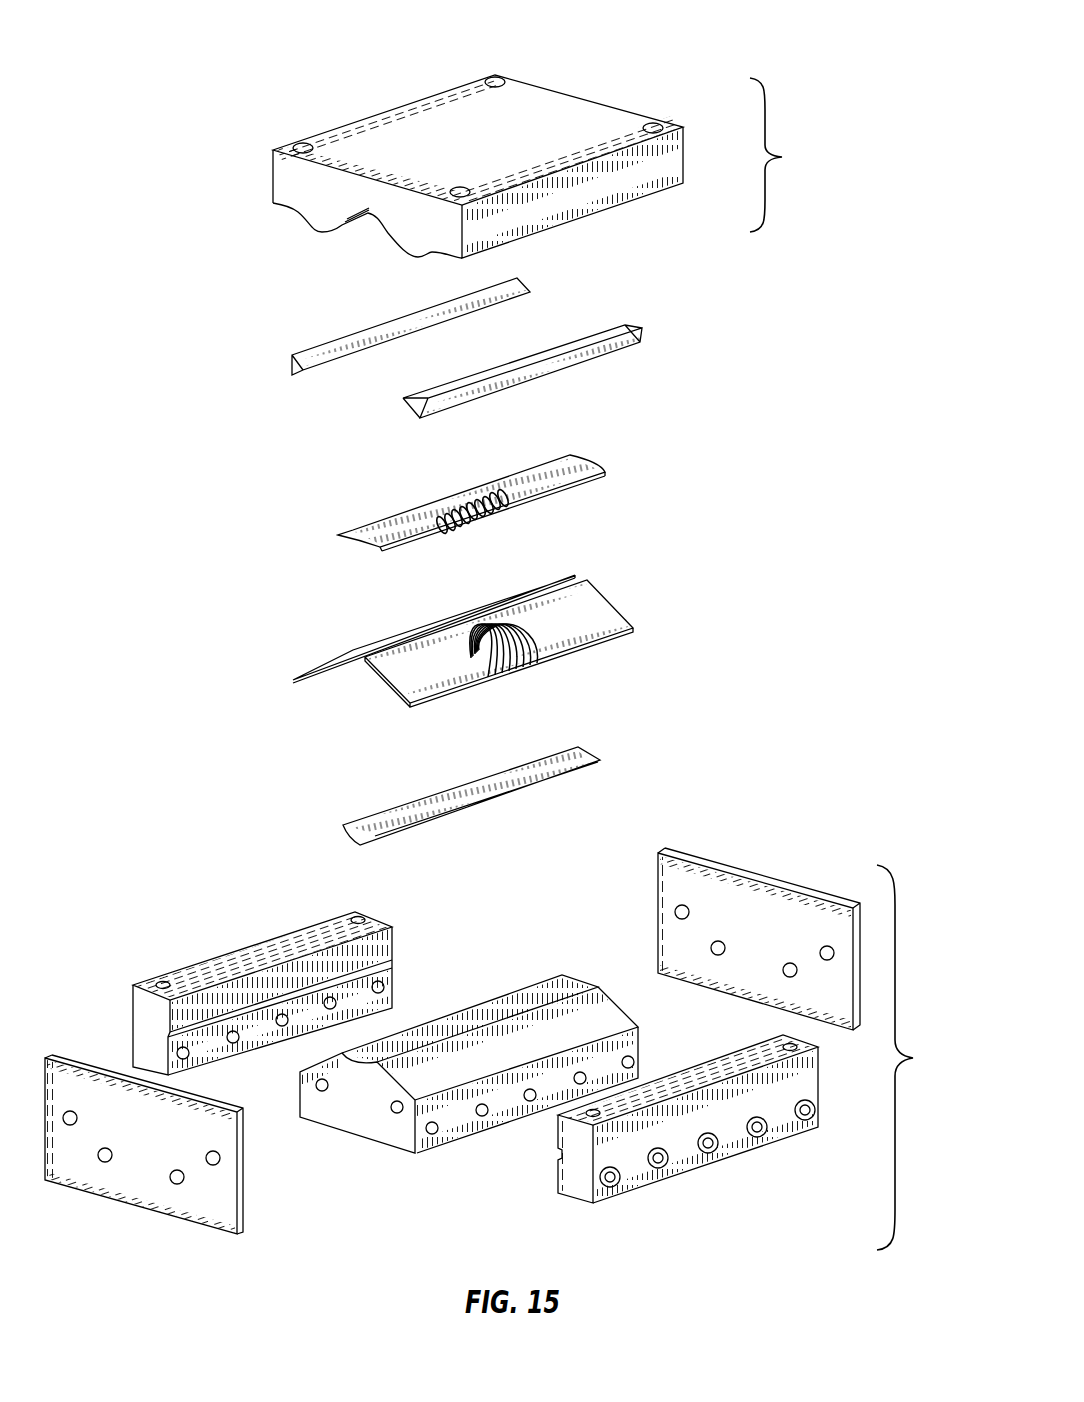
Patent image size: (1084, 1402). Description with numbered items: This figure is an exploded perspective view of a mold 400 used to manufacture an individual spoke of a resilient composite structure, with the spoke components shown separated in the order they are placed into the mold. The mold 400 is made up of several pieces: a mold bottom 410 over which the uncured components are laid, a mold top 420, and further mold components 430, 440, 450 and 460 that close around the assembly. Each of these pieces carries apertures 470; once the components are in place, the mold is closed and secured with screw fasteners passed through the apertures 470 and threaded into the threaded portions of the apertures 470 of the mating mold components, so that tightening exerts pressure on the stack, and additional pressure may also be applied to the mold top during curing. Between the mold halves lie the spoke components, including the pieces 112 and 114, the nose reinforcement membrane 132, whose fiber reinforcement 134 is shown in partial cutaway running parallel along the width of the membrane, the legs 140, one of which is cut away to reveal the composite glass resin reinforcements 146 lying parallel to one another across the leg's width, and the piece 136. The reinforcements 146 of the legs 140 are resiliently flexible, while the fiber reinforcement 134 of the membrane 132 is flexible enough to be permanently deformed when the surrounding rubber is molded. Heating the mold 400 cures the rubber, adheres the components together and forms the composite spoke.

The mold 400 is at (855, 664).
The mold top 420 is at (567, 108).
The apertures 470 is at (495, 80).
The first wedge bar 114 is at (387, 330).
The second wedge bar 112 is at (627, 342).
The nose reinforcement membrane 132 is at (582, 465).
The fiber reinforcement 134 is at (493, 508).
The legs 140 is at (322, 667).
The composite glass resin reinforcements 146 is at (527, 663).
The lower plate 136 is at (575, 762).
The mold component 460 is at (145, 1010).
The mold bottom 410 is at (378, 1120).
The mold component 450 is at (678, 1147).
The mold component 430 is at (743, 895).
The mold component 440 is at (187, 1202).